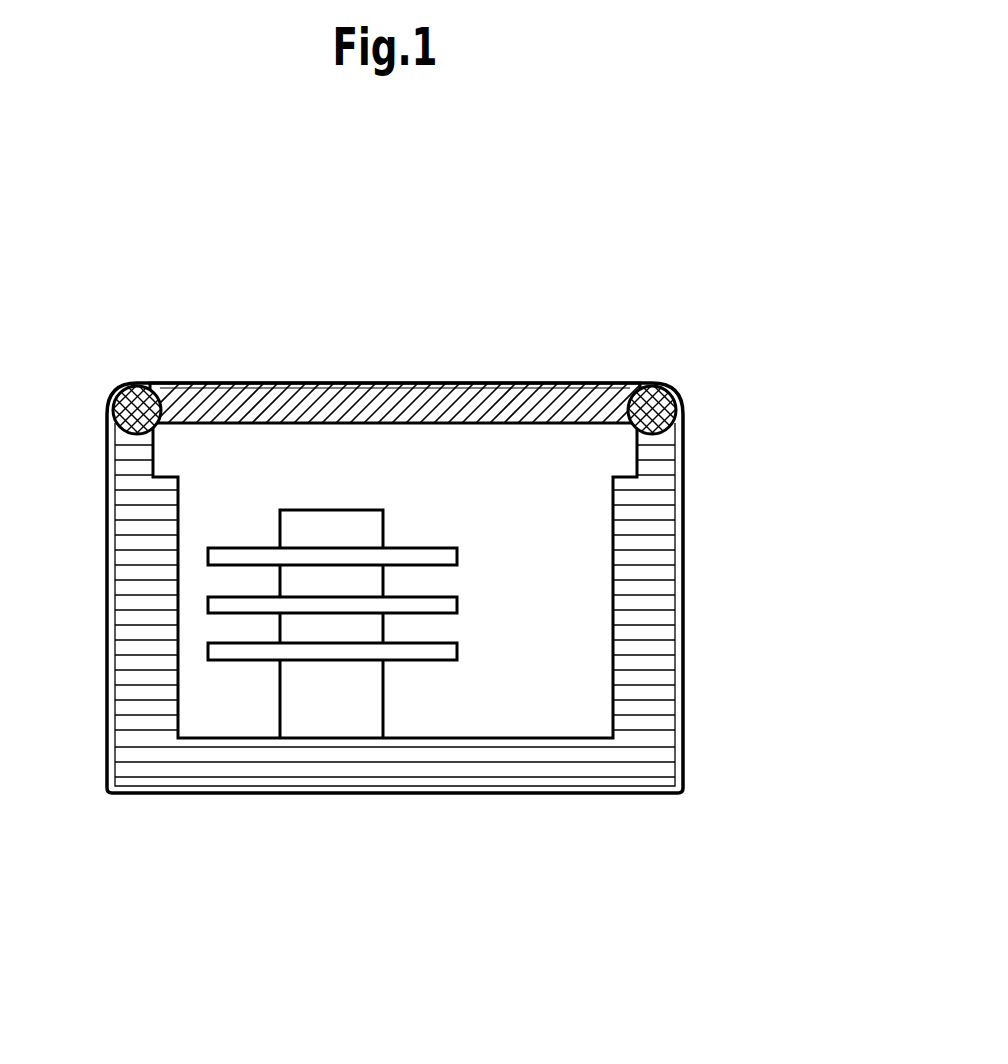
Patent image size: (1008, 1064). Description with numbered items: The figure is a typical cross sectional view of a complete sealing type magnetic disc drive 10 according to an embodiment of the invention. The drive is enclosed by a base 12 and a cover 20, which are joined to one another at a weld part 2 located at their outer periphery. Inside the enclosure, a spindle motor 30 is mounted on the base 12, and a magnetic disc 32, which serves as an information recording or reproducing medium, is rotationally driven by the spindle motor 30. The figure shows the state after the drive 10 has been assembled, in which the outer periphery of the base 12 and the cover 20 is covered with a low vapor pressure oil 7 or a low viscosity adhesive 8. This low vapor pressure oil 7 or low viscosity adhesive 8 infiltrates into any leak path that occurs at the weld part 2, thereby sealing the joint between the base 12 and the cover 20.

The complete sealing type magnetic disc drive 10 is at (216, 290).
The weld part 2 is at (128, 393).
The cover 20 is at (395, 383).
The low vapor pressure oil 7 is at (514, 639).
The low viscosity adhesive 8 is at (514, 639).
The base 12 is at (645, 748).
The spindle motor 30 is at (337, 525).
The magnetic disc 32 is at (457, 652).